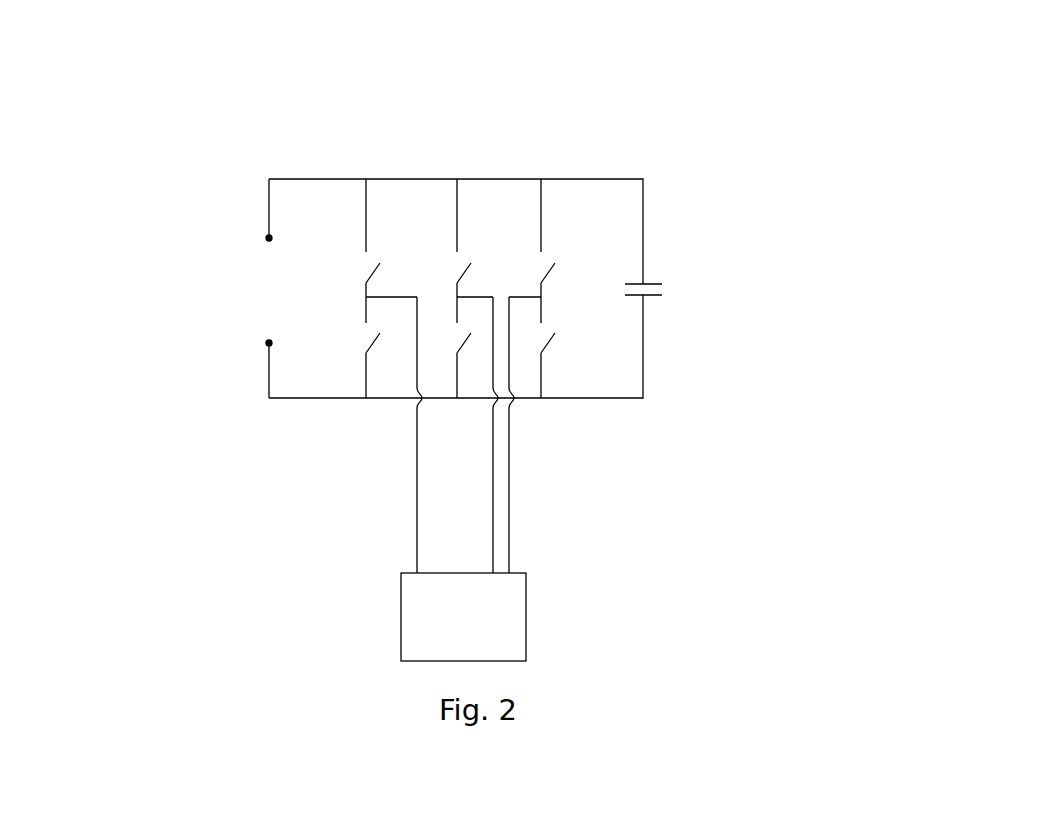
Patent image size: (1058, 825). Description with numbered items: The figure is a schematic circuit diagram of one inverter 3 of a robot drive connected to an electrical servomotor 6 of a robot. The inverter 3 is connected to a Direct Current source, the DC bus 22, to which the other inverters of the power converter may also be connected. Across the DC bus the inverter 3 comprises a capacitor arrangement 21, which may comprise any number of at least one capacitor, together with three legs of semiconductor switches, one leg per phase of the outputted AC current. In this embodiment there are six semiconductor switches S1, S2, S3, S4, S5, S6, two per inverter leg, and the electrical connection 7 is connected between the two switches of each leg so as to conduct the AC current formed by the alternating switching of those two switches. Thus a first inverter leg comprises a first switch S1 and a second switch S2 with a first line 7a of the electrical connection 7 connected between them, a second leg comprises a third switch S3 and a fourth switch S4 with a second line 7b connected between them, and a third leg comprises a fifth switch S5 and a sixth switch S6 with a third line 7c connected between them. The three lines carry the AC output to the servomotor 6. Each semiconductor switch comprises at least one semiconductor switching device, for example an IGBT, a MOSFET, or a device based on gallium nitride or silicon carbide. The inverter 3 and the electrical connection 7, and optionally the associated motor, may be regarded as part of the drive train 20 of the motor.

The inverter 3 is at (526, 209).
The drive train 20 is at (779, 178).
The capacitor arrangement 21 is at (652, 282).
The DC bus 22 is at (203, 298).
The electrical connection 7 is at (541, 435).
The first line 7a is at (417, 476).
The second line 7b is at (493, 510).
The third line 7c is at (510, 466).
The electrical servomotor 6 is at (472, 631).
The first switch S1 is at (354, 238).
The second switch S2 is at (354, 347).
The third switch S3 is at (446, 238).
The fourth switch S4 is at (447, 347).
The fifth switch S5 is at (529, 238).
The sixth switch S6 is at (565, 347).